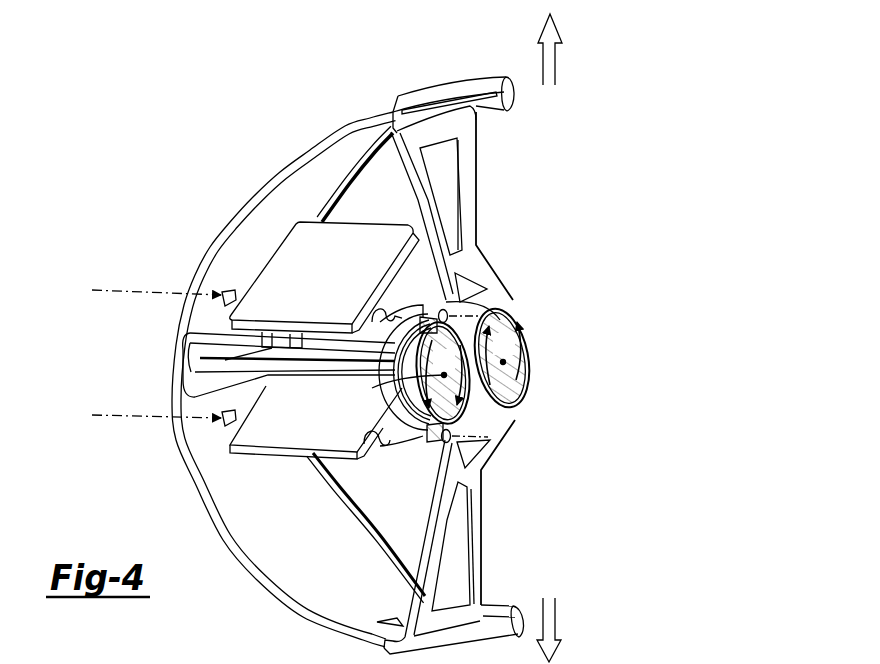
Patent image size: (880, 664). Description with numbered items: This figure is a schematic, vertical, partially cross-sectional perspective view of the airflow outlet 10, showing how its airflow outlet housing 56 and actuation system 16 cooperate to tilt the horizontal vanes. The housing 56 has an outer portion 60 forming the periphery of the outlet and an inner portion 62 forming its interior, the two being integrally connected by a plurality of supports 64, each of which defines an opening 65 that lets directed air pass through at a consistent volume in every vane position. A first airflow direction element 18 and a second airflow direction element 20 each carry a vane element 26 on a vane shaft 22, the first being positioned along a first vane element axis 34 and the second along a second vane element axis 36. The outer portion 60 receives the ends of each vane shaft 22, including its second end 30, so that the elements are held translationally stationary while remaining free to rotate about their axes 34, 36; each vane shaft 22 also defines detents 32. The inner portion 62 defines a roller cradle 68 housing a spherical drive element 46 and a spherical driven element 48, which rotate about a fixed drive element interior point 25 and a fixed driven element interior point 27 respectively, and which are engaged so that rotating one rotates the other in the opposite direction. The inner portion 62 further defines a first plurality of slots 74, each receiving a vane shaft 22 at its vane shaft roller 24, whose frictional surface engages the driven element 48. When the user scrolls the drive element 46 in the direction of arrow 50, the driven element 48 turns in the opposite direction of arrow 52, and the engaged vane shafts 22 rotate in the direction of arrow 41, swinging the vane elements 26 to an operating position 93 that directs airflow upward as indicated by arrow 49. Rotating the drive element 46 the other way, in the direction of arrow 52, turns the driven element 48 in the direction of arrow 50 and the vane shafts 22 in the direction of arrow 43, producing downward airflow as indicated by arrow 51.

The airflow outlet 10 is at (459, 61).
The actuation system 16 is at (456, 372).
The first airflow direction element 18 is at (377, 214).
The second airflow direction element 20 is at (277, 460).
The vane shaft 22 is at (373, 317).
The vane shaft roller 24 is at (414, 334).
The drive element interior point 25 is at (506, 362).
The vane element 26 is at (326, 280).
The driven element interior point 27 is at (447, 376).
The second end 30 is at (236, 294).
The detent 32 is at (391, 316).
The first vane element axis 34 is at (180, 300).
The second vane element axis 36 is at (176, 428).
The arrow 41 is at (110, 296).
The arrow 43 is at (97, 318).
The drive element 46 is at (515, 353).
The driven element 48 is at (455, 370).
The arrow 49 is at (559, 49).
The arrow 50 is at (524, 353).
The arrow 51 is at (559, 630).
The arrow 52 is at (508, 388).
The airflow outlet housing 56 is at (186, 485).
The outer portion 60 is at (306, 553).
The inner portion 62 is at (389, 399).
The support 64 is at (468, 179).
The opening 65 is at (450, 174).
The roller cradle 68 is at (474, 320).
The first plurality of slots 74 is at (451, 306).
The operating position 93 is at (312, 461).